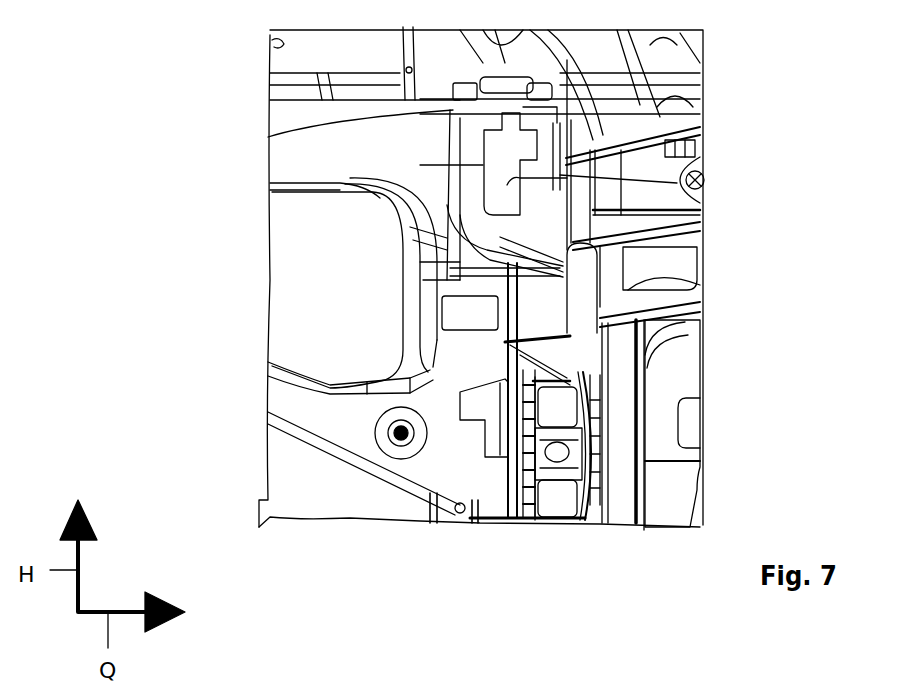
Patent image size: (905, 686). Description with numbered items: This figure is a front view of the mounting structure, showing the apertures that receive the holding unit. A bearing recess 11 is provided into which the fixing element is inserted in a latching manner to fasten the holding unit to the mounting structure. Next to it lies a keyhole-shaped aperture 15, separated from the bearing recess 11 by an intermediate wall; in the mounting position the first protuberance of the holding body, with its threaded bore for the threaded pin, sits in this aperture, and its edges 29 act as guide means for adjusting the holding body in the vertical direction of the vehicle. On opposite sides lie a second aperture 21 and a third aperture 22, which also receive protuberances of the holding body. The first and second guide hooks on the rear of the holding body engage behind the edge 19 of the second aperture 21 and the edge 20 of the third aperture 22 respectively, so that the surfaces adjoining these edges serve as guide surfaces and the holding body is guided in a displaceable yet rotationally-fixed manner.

The bearing recess 11 is at (272, 136).
The edges of the first aperture 29 is at (508, 178).
The keyhole-shaped aperture 15 is at (700, 177).
The second aperture 21 is at (703, 257).
The edge of the second aperture 19 is at (703, 290).
The edge of the third aperture 20 is at (470, 432).
The third aperture 22 is at (488, 450).